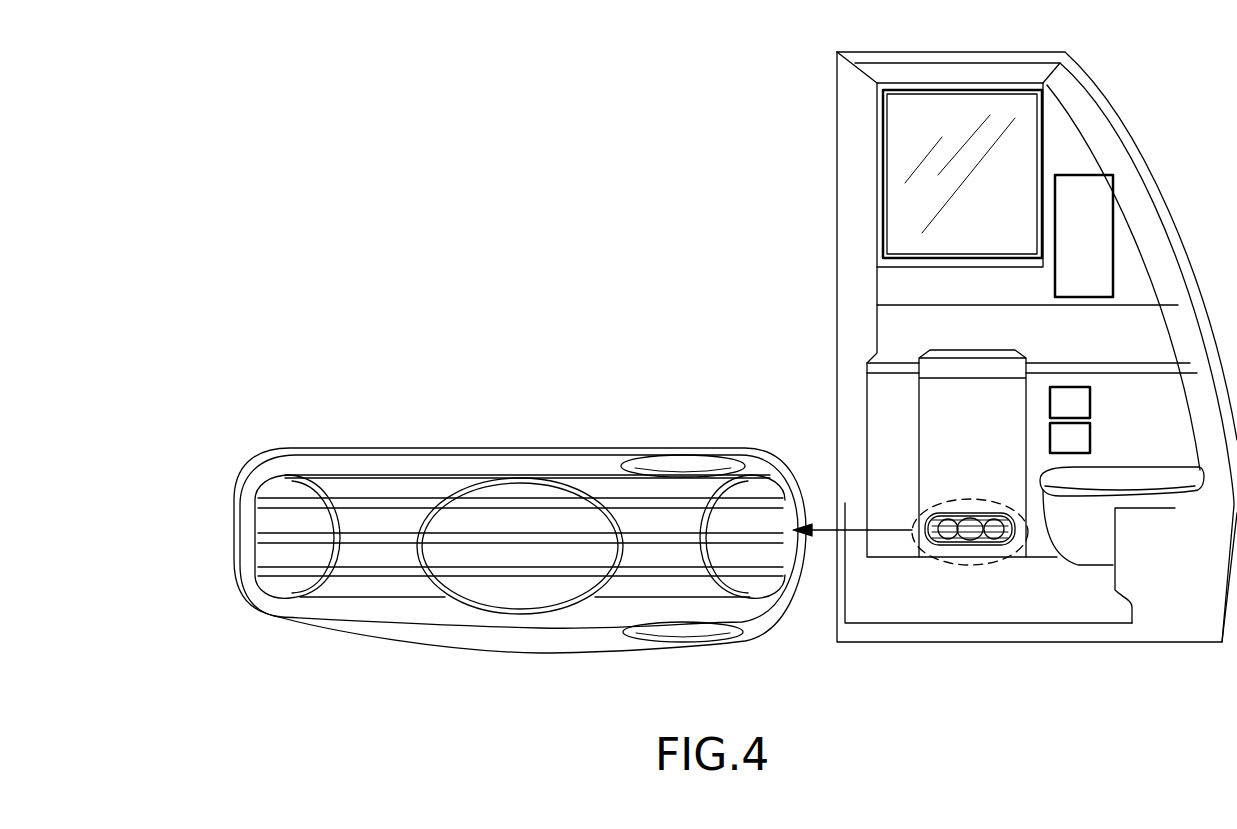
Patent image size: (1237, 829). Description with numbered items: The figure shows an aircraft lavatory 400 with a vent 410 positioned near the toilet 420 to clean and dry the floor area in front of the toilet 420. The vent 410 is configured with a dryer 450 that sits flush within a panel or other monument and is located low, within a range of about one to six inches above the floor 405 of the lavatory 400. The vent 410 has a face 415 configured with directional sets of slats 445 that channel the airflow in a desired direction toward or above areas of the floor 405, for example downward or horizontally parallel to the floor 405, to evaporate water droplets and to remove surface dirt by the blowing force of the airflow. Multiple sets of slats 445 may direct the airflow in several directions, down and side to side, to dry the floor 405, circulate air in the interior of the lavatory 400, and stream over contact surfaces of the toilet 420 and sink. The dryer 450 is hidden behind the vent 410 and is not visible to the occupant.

The lavatory 400 is at (230, 148).
The floor 405 is at (973, 598).
The vent 410 is at (258, 473).
The face 415 is at (542, 616).
The toilet 420 is at (1090, 548).
The slats 445 is at (268, 590).
The dryer 450 is at (967, 497).